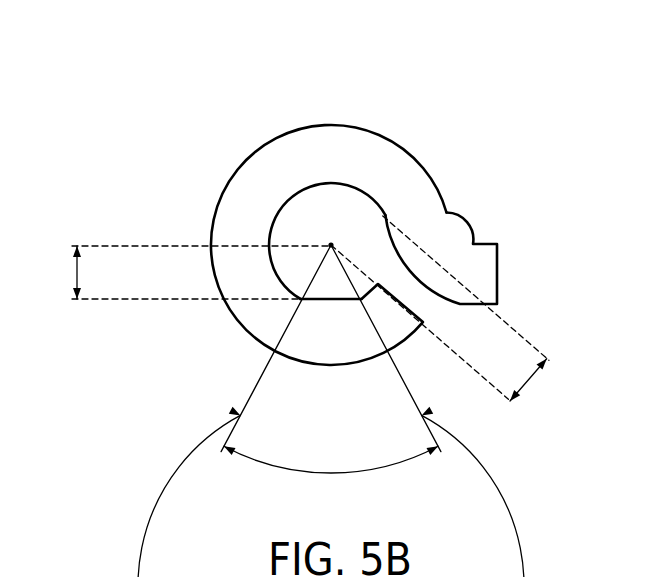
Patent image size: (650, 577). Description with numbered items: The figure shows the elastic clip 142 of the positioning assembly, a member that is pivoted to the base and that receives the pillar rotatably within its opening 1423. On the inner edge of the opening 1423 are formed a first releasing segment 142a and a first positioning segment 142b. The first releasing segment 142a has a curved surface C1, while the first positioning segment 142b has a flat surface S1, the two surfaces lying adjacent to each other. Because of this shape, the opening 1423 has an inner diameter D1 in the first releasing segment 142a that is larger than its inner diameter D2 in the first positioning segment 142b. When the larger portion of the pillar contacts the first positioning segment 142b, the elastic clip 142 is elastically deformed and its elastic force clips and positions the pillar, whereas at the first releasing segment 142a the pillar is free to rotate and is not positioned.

The elastic clip 142 is at (384, 254).
The first releasing segment 142a is at (331, 295).
The first positioning segment 142b is at (331, 379).
The opening 1423 is at (337, 193).
The curved surface C1 is at (299, 199).
The flat surface S1 is at (347, 302).
The inner diameter of the opening in the first releasing segment D1 is at (444, 314).
The inner diameter of the opening in the first positioning segment D2 is at (182, 272).